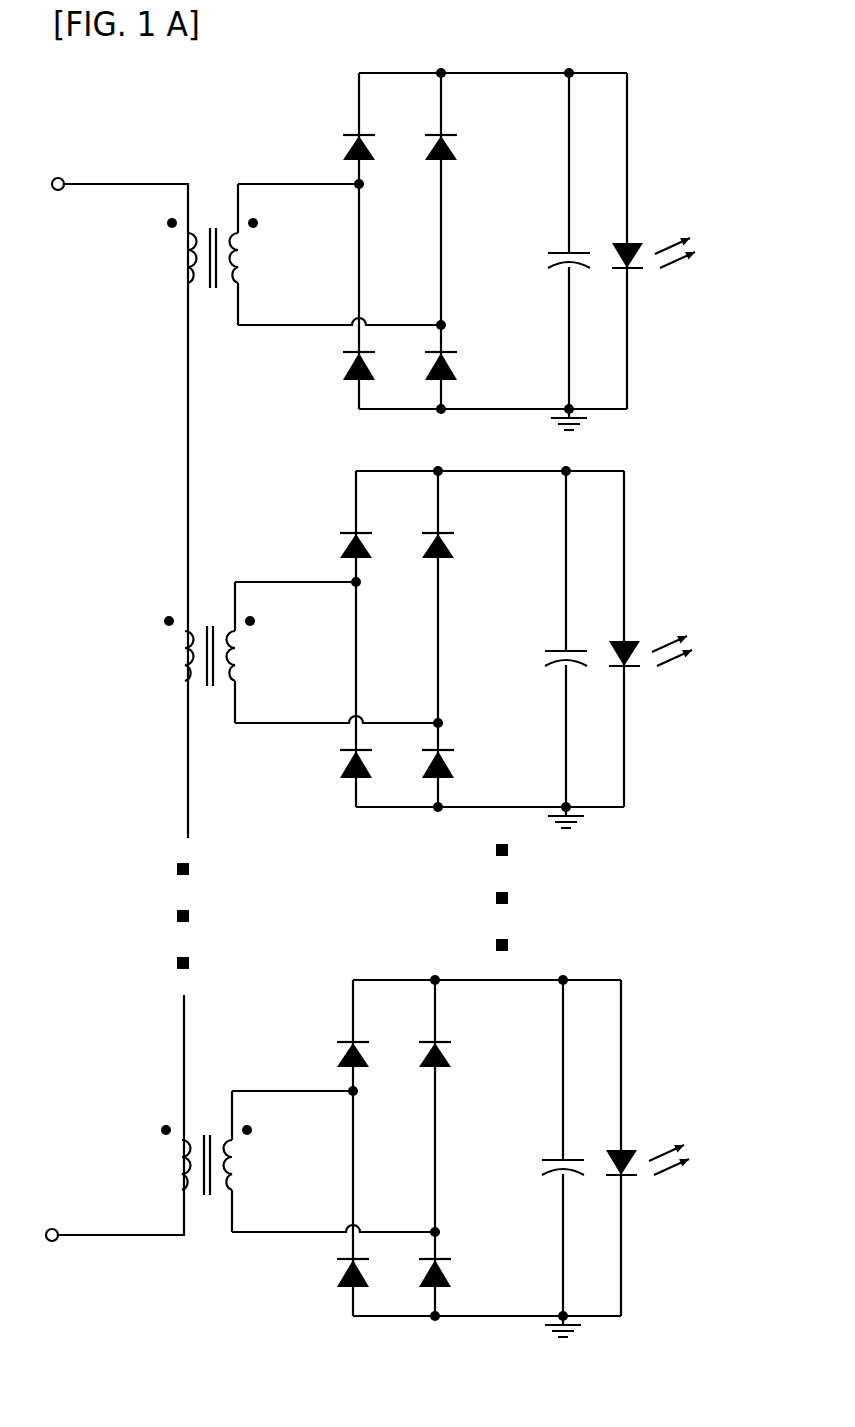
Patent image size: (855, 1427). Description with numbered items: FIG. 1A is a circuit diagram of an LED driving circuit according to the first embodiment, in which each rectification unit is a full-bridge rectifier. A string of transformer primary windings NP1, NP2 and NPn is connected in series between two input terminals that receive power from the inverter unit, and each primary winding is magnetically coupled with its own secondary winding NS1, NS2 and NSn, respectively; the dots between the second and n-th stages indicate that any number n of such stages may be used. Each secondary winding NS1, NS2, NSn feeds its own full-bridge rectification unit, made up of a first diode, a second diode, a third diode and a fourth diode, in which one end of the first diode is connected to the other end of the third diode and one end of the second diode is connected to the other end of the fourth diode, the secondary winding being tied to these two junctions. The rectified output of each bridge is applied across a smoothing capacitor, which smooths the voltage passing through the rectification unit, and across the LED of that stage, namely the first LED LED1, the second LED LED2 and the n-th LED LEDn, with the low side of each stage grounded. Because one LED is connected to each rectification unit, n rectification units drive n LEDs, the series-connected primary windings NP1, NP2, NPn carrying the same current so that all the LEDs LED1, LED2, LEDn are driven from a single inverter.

The first LED LED1 is at (668, 276).
The second LED LED2 is at (665, 675).
The n-th LED LEDn is at (662, 1184).
The first primary winding NP1 is at (166, 253).
The second primary winding NP2 is at (163, 651).
The n-th primary winding NPn is at (160, 1160).
The first secondary winding NS1 is at (270, 250).
The second secondary winding NS2 is at (267, 648).
The n-th secondary winding NSn is at (264, 1157).